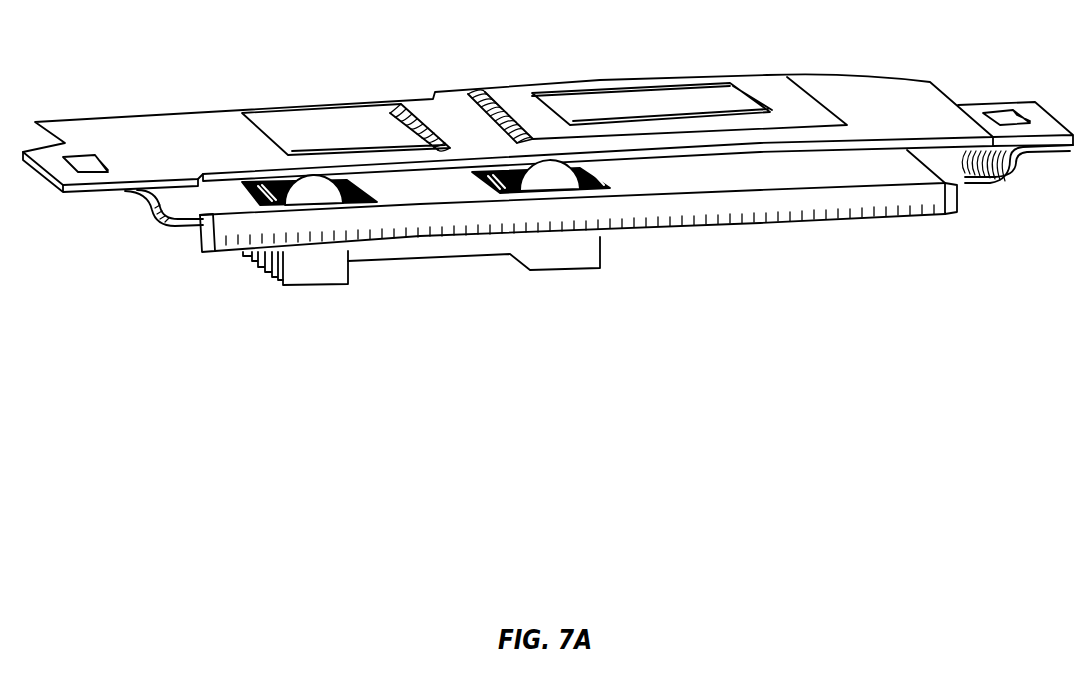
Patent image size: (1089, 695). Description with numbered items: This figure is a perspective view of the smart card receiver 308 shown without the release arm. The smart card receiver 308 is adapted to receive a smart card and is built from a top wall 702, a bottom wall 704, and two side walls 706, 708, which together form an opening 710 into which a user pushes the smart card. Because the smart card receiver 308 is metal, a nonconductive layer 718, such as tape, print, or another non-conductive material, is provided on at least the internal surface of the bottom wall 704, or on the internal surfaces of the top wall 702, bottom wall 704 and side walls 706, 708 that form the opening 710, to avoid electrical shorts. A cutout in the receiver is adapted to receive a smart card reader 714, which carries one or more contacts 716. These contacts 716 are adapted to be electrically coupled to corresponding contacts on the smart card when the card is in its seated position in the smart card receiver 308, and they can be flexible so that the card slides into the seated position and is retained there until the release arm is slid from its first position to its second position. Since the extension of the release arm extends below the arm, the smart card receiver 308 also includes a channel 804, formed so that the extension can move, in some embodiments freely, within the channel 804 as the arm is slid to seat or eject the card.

The top wall 702 is at (863, 93).
The channel 804 is at (300, 130).
The smart card receiver 308 is at (352, 80).
The side wall 706 is at (173, 196).
The side wall 708 is at (1012, 174).
The bottom wall 704 is at (847, 168).
The nonconductive layer 718 is at (777, 175).
The opening 710 is at (717, 178).
The contacts 716 is at (323, 193).
The smart card reader 714 is at (317, 268).